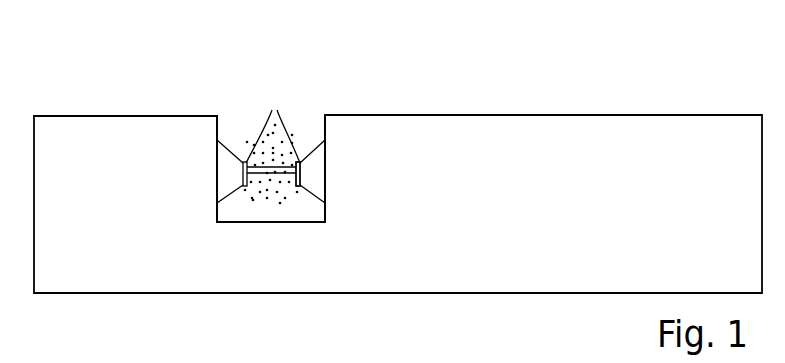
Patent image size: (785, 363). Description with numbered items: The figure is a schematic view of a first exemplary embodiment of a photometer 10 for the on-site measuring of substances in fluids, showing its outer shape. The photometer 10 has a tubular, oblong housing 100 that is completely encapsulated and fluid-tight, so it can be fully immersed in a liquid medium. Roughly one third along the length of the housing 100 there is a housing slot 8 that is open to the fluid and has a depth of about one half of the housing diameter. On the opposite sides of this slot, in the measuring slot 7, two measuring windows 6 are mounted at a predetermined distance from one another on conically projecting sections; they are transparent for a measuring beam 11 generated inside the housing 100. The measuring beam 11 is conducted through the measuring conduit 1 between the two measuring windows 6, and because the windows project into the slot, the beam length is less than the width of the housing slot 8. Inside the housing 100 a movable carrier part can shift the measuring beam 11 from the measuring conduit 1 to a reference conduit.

The photometer 10 is at (527, 97).
The housing 100 is at (375, 152).
The housing slot 8 is at (226, 114).
The measuring slot 7 is at (273, 198).
The measuring beam 11 is at (255, 177).
The measuring conduit 1 is at (290, 190).
The measuring windows 6 is at (272, 145).